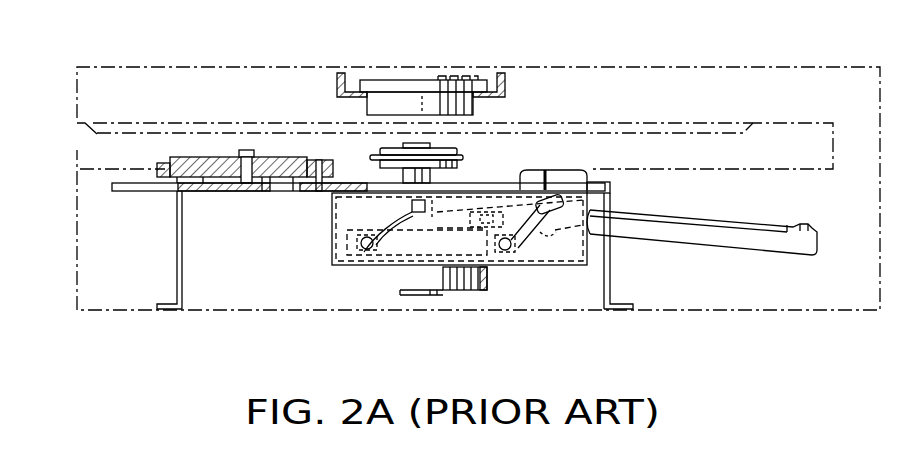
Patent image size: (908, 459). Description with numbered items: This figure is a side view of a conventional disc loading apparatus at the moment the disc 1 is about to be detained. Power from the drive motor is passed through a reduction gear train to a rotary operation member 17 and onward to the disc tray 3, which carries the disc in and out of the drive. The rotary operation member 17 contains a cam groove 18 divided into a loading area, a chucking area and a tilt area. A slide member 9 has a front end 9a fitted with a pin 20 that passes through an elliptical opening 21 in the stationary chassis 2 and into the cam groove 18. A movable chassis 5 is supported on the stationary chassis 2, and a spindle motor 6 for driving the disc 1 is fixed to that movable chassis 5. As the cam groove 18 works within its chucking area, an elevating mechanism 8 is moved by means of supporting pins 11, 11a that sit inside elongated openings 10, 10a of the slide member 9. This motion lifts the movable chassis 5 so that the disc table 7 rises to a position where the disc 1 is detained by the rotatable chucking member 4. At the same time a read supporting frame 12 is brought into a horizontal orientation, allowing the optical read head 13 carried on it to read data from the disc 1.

The disc 1 is at (677, 122).
The stationary chassis 2 is at (203, 193).
The disc tray 3 is at (77, 147).
The rotatable chucking member 4 is at (432, 103).
The movable chassis 5 is at (553, 240).
The spindle motor 6 is at (457, 290).
The disc table 7 is at (463, 153).
The elevating mechanism 8 is at (325, 247).
The slide member 9 is at (328, 255).
The front end of slide member 9a is at (293, 195).
The elongated opening 10 is at (390, 235).
The elongated opening 10a is at (545, 240).
The supporting pin 11 is at (366, 250).
The supporting pin 11a is at (505, 250).
The read supporting frame 12 is at (682, 240).
The optical read head 13 is at (563, 183).
The rotary operation member 17 is at (190, 157).
The cam groove 18 is at (300, 160).
The pin 20 is at (318, 160).
The elliptical opening 21 is at (267, 193).